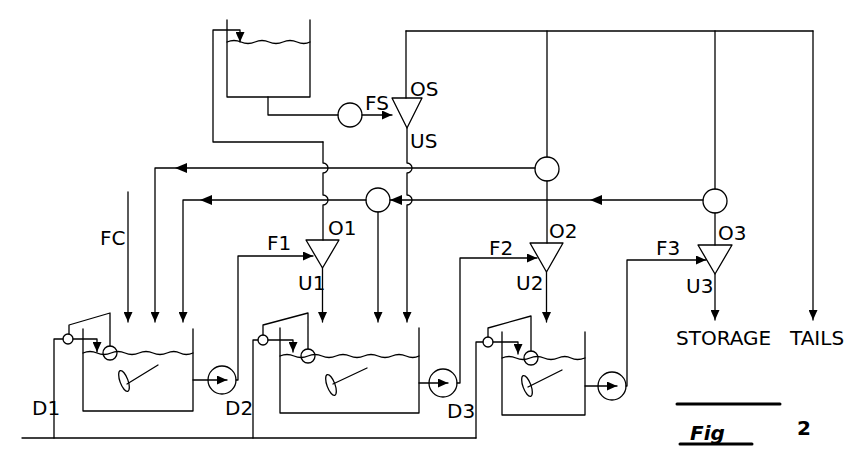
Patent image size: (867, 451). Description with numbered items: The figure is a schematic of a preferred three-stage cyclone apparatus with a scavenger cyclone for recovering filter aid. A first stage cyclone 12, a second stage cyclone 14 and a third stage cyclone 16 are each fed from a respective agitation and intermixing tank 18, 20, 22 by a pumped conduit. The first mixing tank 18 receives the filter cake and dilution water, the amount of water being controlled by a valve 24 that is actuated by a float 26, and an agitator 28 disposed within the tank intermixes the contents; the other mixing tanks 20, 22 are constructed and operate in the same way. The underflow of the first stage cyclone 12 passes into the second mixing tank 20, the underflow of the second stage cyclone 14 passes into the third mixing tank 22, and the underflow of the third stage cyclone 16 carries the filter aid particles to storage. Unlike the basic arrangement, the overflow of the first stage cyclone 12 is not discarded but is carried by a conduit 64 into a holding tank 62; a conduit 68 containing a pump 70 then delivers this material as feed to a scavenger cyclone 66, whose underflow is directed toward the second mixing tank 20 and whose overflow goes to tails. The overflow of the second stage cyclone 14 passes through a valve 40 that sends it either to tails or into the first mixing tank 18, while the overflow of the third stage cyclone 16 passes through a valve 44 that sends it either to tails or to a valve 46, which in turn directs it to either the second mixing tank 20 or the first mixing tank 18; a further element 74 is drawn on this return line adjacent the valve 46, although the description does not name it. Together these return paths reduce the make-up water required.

The first stage cyclone 12 is at (312, 240).
The second stage cyclone 14 is at (536, 243).
The third stage cyclone 16 is at (704, 245).
The first mixing tank 18 is at (193, 356).
The second mixing tank 20 is at (419, 362).
The third mixing tank 22 is at (585, 362).
The valve 24 is at (63, 335).
The float 26 is at (116, 348).
The agitator 28 is at (134, 379).
The valve 40 is at (555, 163).
The valve 44 is at (723, 194).
The valve 46 is at (367, 193).
The holding tank 62 is at (328, 21).
The conduit 64 is at (258, 142).
The scavenger cyclone 66 is at (415, 113).
The conduit 68 is at (378, 130).
The pump 70 is at (343, 104).
The flow sensor 74 is at (387, 212).